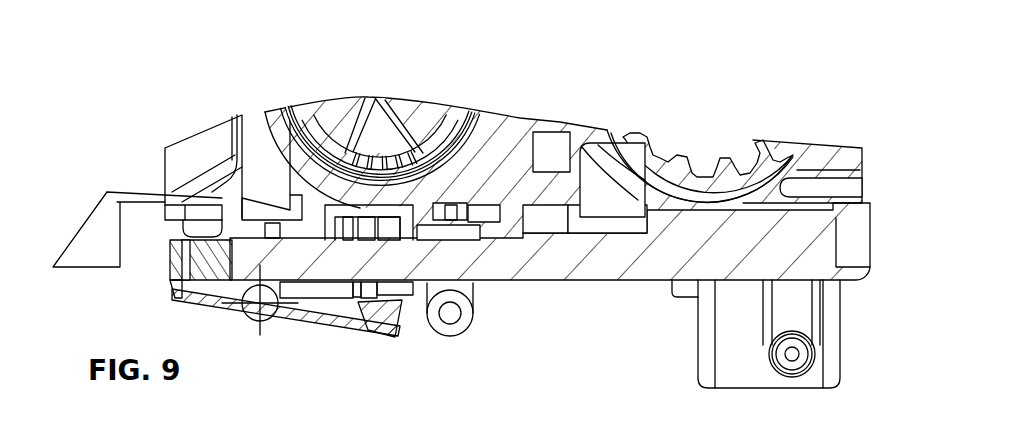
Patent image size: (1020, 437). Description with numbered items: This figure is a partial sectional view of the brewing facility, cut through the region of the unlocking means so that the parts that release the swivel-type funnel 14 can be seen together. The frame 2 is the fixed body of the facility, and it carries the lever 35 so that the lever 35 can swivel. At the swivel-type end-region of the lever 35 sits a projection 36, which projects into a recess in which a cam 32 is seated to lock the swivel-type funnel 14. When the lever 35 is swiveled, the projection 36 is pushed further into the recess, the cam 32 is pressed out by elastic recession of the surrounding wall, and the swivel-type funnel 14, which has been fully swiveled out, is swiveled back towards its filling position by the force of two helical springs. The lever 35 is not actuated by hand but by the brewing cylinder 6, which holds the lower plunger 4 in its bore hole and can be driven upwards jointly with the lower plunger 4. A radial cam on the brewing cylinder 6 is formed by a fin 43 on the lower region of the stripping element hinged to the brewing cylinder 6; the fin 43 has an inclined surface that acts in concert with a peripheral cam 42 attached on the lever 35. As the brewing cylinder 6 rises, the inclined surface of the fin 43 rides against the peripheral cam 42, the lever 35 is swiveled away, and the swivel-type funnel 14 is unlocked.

The frame 2 is at (585, 268).
The lower plunger 4 is at (292, 108).
The brewing cylinder 6 is at (280, 118).
The swivel-type funnel 14 is at (90, 227).
The cam 32 is at (208, 210).
The lever 35 is at (318, 329).
The projection 36 is at (190, 247).
The peripheral cam 42 is at (378, 334).
The fin 43 is at (402, 290).